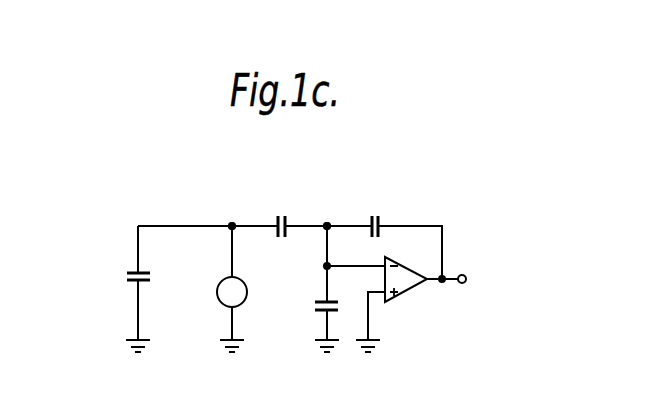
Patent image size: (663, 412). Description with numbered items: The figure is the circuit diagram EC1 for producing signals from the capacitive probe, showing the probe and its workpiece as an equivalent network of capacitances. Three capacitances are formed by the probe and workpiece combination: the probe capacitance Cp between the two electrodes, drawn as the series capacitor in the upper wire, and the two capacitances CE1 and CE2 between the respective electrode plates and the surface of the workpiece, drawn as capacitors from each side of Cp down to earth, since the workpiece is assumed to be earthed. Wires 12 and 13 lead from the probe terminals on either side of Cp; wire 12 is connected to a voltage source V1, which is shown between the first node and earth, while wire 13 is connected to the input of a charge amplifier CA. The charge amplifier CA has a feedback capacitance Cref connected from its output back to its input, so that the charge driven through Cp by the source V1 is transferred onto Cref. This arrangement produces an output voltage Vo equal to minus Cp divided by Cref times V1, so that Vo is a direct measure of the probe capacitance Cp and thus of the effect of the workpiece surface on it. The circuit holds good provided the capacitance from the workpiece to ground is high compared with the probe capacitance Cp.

The wire 12 is at (252, 222).
The wire 13 is at (310, 222).
The capacitance between first electrode and workpiece surface CE1 is at (132, 271).
The capacitance between second electrode and workpiece surface CE2 is at (322, 312).
The probe capacitance Cp is at (275, 222).
The feedback capacitance Cref is at (382, 223).
The charge amplifier CA is at (433, 247).
The circuit diagram EC1 is at (455, 181).
The voltage source V1 is at (228, 297).
The output voltage Vo is at (476, 282).